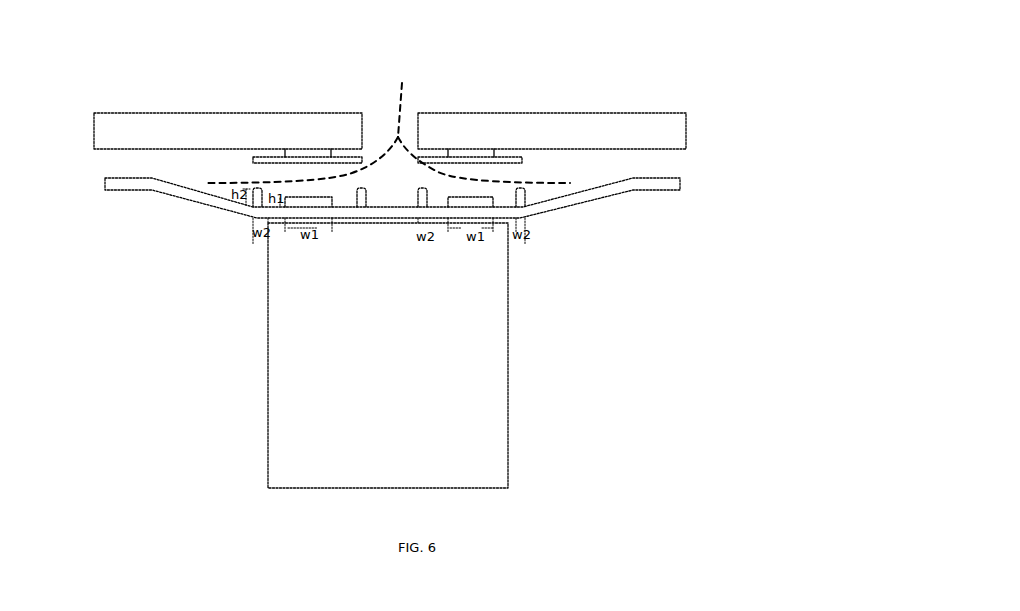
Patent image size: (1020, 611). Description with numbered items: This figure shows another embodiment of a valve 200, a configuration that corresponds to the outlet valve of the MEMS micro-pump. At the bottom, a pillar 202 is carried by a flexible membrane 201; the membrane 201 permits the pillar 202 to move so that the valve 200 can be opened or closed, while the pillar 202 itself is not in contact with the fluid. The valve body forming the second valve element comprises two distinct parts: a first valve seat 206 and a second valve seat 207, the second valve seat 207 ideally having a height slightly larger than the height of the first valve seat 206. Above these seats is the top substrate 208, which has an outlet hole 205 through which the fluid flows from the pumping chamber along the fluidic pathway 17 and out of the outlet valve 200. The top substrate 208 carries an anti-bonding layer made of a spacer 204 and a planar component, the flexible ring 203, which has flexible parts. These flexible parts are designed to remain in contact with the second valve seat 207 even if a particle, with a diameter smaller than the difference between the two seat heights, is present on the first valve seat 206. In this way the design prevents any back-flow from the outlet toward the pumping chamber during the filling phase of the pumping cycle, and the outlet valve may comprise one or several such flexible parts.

The fluidic pathway 17 is at (389, 62).
The valve 200 is at (710, 43).
The membrane 201 is at (207, 221).
The pillar 202 is at (283, 416).
The flexible ring 203 is at (371, 165).
The spacer 204 is at (294, 143).
The outlet hole 205 is at (375, 114).
The first valve seat 206 is at (458, 214).
The second valve seat 207 is at (350, 205).
The top substrate 208 is at (556, 114).